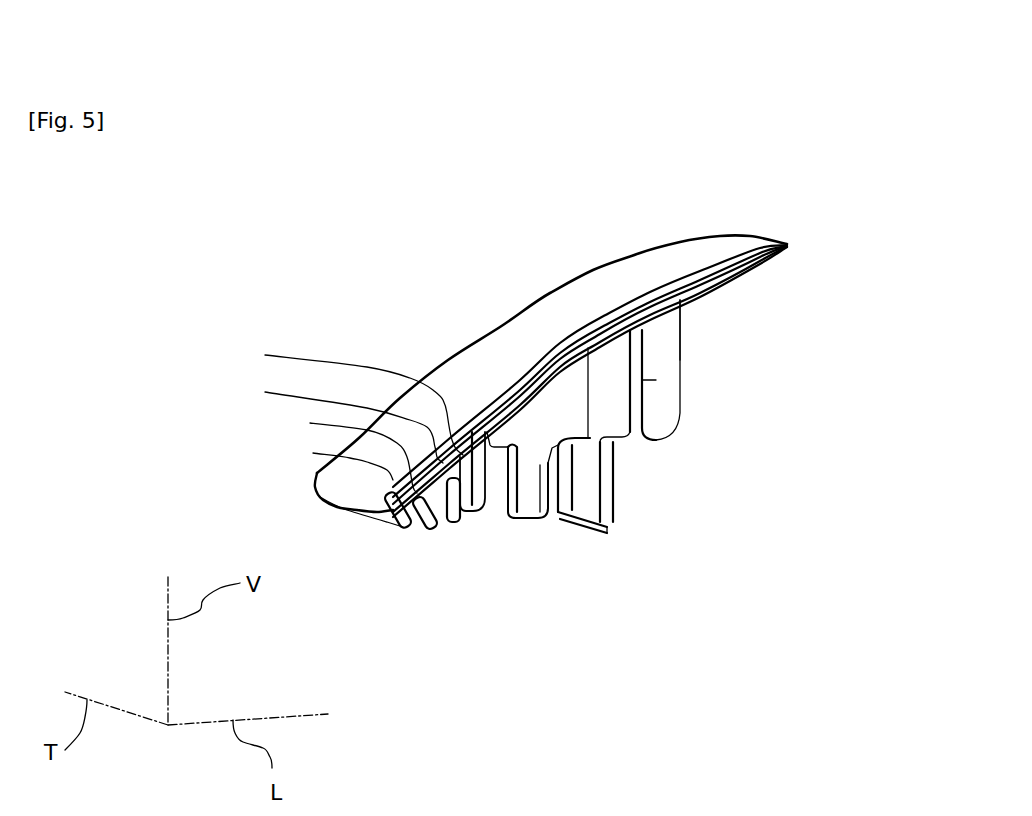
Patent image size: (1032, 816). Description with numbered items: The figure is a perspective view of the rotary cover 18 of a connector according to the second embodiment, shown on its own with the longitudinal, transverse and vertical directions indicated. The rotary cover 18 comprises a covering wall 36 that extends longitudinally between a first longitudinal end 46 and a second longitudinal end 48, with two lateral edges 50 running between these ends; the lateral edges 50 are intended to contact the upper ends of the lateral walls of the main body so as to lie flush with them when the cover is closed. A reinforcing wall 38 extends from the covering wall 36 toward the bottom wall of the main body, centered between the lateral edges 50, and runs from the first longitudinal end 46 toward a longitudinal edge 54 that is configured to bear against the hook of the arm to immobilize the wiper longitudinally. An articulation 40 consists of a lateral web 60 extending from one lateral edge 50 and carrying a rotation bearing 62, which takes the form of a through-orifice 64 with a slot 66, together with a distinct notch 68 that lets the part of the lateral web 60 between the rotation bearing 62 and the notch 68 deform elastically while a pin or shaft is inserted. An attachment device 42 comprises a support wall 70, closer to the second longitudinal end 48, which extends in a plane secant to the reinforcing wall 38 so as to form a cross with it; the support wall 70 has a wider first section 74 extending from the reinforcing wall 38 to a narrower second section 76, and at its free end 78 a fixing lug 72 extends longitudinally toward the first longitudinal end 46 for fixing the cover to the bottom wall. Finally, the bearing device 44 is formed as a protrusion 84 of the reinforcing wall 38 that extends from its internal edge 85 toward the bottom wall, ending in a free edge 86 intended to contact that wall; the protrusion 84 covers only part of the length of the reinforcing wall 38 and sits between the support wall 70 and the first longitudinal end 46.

The rotary cover 18 is at (527, 323).
The covering wall 36 is at (557, 313).
The reinforcing wall 38 is at (650, 382).
The articulation 40 is at (227, 343).
The attachment device 42 is at (843, 415).
The bearing device 44 is at (515, 524).
The first longitudinal end 46 is at (353, 513).
The second longitudinal end 48 is at (723, 237).
The lateral edges 50 is at (578, 340).
The longitudinal edge 54 is at (680, 358).
The lateral web 60 is at (348, 398).
The rotation bearing 62 is at (278, 407).
The through-orifice 64 is at (359, 471).
The slot 66 is at (346, 486).
The notch 68 is at (338, 421).
The support wall 70 is at (782, 402).
The fixing lug 72 is at (613, 520).
The first section 74 is at (618, 406).
The second section 76 is at (587, 457).
The free end 78 is at (607, 528).
The protrusion 84 is at (513, 513).
The internal edge 85 is at (490, 530).
The free edge 86 is at (537, 513).